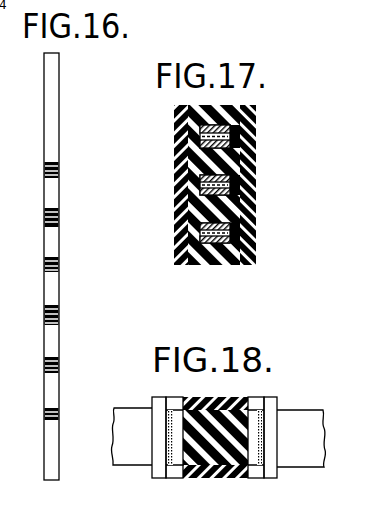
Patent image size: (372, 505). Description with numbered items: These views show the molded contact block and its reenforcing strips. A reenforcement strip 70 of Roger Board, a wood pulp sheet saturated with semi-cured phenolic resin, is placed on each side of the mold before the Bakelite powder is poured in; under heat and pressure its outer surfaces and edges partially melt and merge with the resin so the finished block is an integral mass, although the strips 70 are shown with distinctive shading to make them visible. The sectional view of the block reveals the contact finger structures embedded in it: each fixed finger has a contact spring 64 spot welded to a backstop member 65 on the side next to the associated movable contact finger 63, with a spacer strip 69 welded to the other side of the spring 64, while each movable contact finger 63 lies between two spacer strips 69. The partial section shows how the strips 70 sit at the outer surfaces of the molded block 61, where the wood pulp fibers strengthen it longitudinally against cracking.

In FIG. 17, the tubular body / core 61 is at (215, 197).
In FIG. 18, the tubular body / core 61 is at (207, 478).
In FIG. 17, the movable contact finger 63 is at (190, 183).
In FIG. 17, the contact spring 64 is at (190, 141).
In FIG. 17, the backstop member 65 is at (255, 153).
In FIG. 17, the spacer strip 69 is at (256, 134).
In FIG. 16, the reenforcing strip 70 is at (52, 119).
In FIG. 17, the reenforcing strip 70 is at (175, 122).
In FIG. 18, the reenforcing strip 70 is at (241, 397).